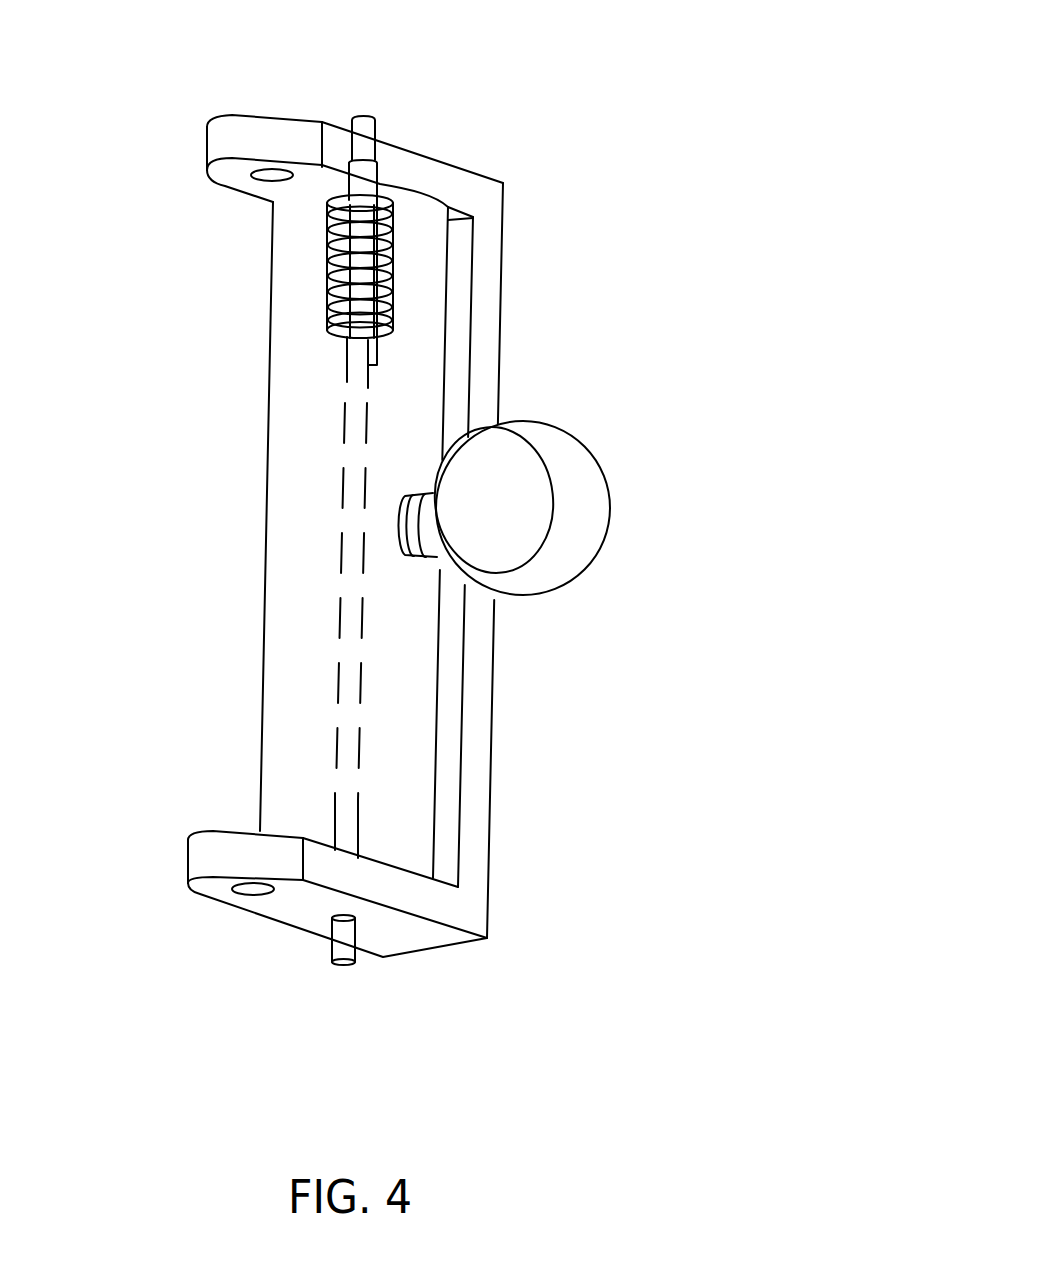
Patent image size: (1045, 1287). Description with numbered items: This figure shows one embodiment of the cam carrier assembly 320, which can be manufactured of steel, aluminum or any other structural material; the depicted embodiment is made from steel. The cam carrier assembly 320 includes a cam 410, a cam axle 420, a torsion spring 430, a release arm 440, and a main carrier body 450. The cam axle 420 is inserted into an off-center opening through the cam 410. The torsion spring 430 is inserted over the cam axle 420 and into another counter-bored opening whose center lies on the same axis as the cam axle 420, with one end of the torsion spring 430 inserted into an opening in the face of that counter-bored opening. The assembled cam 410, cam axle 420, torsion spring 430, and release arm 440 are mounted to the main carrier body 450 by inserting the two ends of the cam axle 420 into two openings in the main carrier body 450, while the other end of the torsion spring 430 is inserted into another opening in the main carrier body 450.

The cam carrier assembly 320 is at (713, 1004).
The cam 410 is at (263, 638).
The cam axle 420 is at (373, 118).
The torsion spring 430 is at (328, 247).
The release arm 440 is at (610, 510).
The main carrier body 450 is at (490, 755).